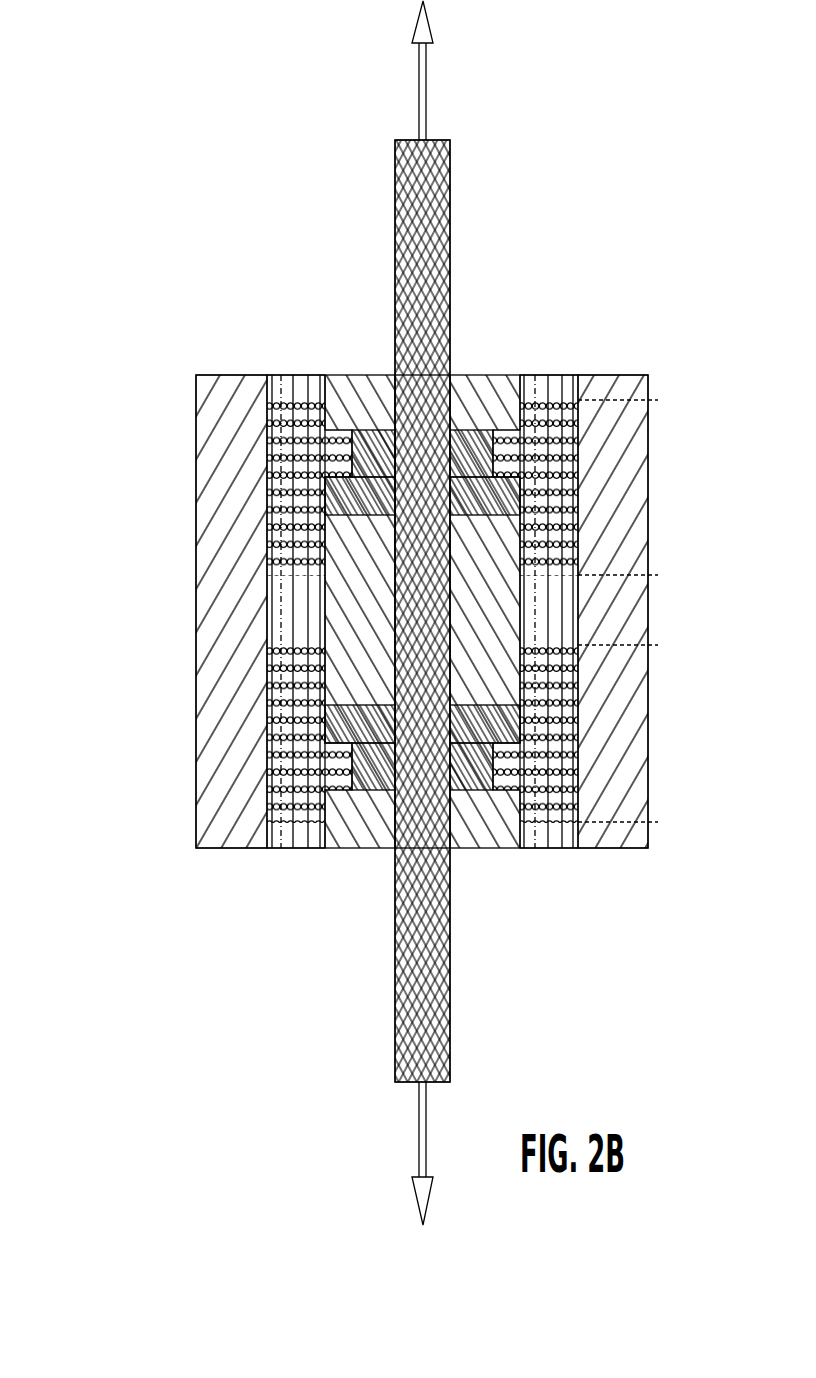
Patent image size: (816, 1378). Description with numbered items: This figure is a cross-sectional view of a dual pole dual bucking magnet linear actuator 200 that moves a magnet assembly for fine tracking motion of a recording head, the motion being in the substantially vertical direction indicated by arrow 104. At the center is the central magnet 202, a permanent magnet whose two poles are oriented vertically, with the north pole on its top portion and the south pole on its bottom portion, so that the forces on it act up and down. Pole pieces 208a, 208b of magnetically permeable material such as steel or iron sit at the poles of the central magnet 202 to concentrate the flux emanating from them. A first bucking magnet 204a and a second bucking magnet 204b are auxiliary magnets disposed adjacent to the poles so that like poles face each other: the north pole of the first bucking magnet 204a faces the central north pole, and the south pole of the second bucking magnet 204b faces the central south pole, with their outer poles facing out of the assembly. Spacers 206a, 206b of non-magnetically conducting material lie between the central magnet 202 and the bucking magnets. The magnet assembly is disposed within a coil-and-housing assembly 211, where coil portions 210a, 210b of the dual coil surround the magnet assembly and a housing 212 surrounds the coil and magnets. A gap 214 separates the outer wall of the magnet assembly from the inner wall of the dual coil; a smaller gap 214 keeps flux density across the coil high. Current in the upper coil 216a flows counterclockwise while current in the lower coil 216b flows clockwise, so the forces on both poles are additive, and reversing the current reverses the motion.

The dual pole dual bucking magnet linear actuator 200 is at (142, 156).
The arrow 104 is at (436, 90).
The central magnet 202 is at (523, 627).
The first bucking magnet 204a is at (350, 373).
The second bucking magnet 204b is at (350, 853).
The spacer 206a is at (352, 443).
The spacer 206b is at (350, 773).
The pole piece 208a is at (323, 495).
The pole piece 208b is at (323, 722).
The coil portion 210a is at (258, 560).
The coil portion 210b is at (258, 660).
The coil-and-housing assembly 211 is at (648, 858).
The housing 212 is at (204, 372).
The gap 214 is at (534, 357).
The upper coil portion current 216a is at (663, 400).
The lower coil portion current 216b is at (663, 645).